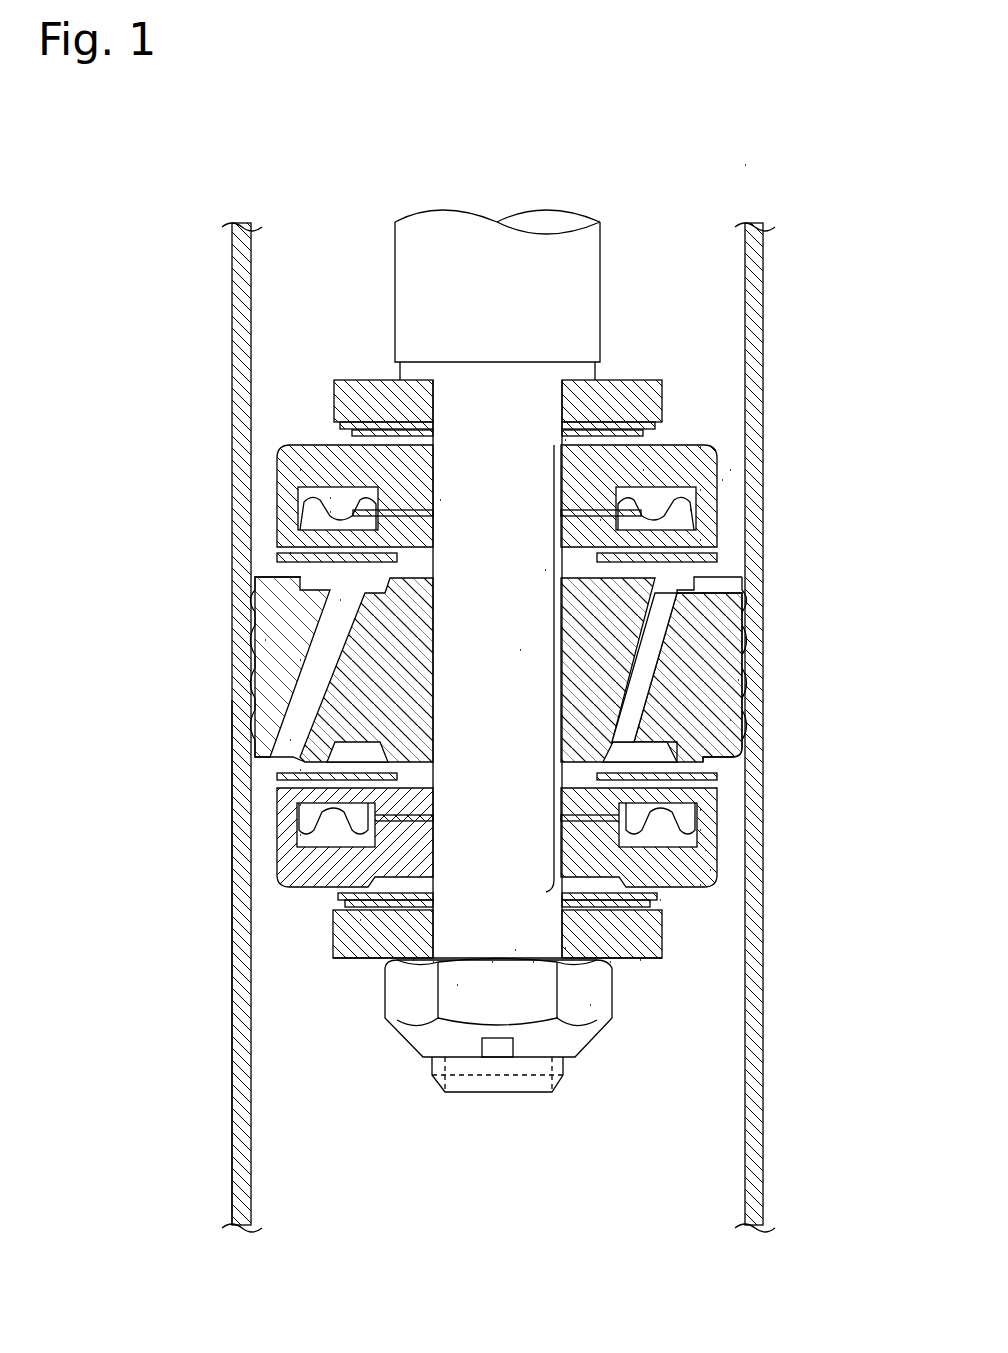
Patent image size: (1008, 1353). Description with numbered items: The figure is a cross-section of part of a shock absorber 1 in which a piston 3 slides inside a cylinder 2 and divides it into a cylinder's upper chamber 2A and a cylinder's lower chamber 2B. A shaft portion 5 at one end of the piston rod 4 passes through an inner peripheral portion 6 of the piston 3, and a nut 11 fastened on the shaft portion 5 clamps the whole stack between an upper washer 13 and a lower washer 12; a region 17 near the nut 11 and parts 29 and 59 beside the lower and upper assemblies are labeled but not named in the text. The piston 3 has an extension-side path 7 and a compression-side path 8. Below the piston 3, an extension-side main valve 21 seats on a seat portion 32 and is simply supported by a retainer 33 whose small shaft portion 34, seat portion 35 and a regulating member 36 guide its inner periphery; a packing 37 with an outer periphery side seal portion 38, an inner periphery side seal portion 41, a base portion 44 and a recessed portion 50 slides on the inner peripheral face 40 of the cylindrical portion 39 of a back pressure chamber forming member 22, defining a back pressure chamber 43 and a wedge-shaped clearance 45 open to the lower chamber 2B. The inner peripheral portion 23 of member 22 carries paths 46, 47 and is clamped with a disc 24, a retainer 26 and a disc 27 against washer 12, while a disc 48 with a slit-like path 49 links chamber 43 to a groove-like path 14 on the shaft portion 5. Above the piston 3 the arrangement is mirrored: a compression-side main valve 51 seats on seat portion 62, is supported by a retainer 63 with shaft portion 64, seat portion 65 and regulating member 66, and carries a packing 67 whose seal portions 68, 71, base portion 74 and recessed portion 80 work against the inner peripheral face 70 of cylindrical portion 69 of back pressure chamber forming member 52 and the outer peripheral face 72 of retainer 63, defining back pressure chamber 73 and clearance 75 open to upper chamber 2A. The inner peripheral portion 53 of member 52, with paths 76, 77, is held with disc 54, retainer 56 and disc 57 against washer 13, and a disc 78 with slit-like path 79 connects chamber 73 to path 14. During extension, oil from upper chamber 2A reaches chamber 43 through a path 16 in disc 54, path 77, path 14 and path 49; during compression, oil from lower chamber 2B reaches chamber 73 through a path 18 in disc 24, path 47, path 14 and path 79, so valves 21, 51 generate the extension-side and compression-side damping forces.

The bush assembly 1 is at (757, 153).
The cylinder 2 is at (770, 262).
The cylinder's upper chamber 2A is at (275, 272).
The cylinder's lower chamber 2B is at (280, 1092).
The piston 3 is at (350, 690).
The piston rod 4 is at (415, 258).
The shaft portion 5 is at (467, 1077).
The inner peripheral portion 6 is at (290, 740).
The extension-side path 7 is at (740, 604).
The compression-side path 8 is at (320, 705).
The nut 11 is at (590, 1005).
The washer 12 is at (400, 945).
The washer 13 is at (360, 400).
The path 14 is at (742, 640).
The path 16 is at (643, 470).
The thread 17 is at (565, 948).
The path 18 is at (640, 960).
The extension-side main valve 21 is at (700, 790).
The back pressure chamber forming member 22 is at (660, 900).
The inner peripheral portion 23 is at (433, 962).
The disc 24 is at (340, 896).
The retainer 26 is at (345, 905).
The disc 27 is at (360, 920).
The lower housing 29 is at (320, 885).
The seat portion 32 is at (280, 777).
The retainer 33 is at (492, 962).
The shaft portion 34 is at (533, 962).
The seat portion 35 is at (515, 950).
The regulating member 36 is at (300, 770).
The packing 37 is at (730, 720).
The outer periphery side seal portion 38 is at (700, 830).
The cylindrical portion 39 is at (705, 850).
The inner peripheral face 40 is at (710, 870).
The inner periphery side seal portion 41 is at (300, 835).
The back pressure chamber 43 is at (700, 810).
The base portion 44 is at (330, 818).
The clearance 45 is at (300, 805).
The path 46 is at (457, 985).
The path 47 is at (413, 960).
The disc 48 is at (700, 885).
The path 49 is at (610, 962).
The recessed portion 50 is at (738, 680).
The compression-side main valve 51 is at (700, 540).
The back pressure chamber forming member 52 is at (720, 455).
The inner peripheral portion 53 is at (545, 570).
The disc 54 is at (330, 448).
The retainer 56 is at (350, 433).
The disc 57 is at (355, 425).
The upper housing corner 59 is at (300, 470).
The seat portion 62 is at (300, 577).
The retainer 63 is at (520, 650).
The shaft portion 64 is at (300, 660).
The seat portion 65 is at (340, 600).
The regulating member 66 is at (265, 640).
The packing 67 is at (730, 470).
The outer periphery side seal portion 68 is at (330, 512).
The cylindrical portion 69 is at (700, 490).
The inner peripheral face 70 is at (722, 480).
The inner periphery side seal portion 71 is at (360, 522).
The outer peripheral face 72 is at (720, 565).
The back pressure chamber 73 is at (330, 498).
The base portion 74 is at (330, 565).
The clearance 75 is at (690, 510).
The path 76 is at (440, 500).
The path 77 is at (565, 440).
The disc 78 is at (700, 447).
The path 79 is at (600, 520).
The recessed portion 80 is at (290, 553).